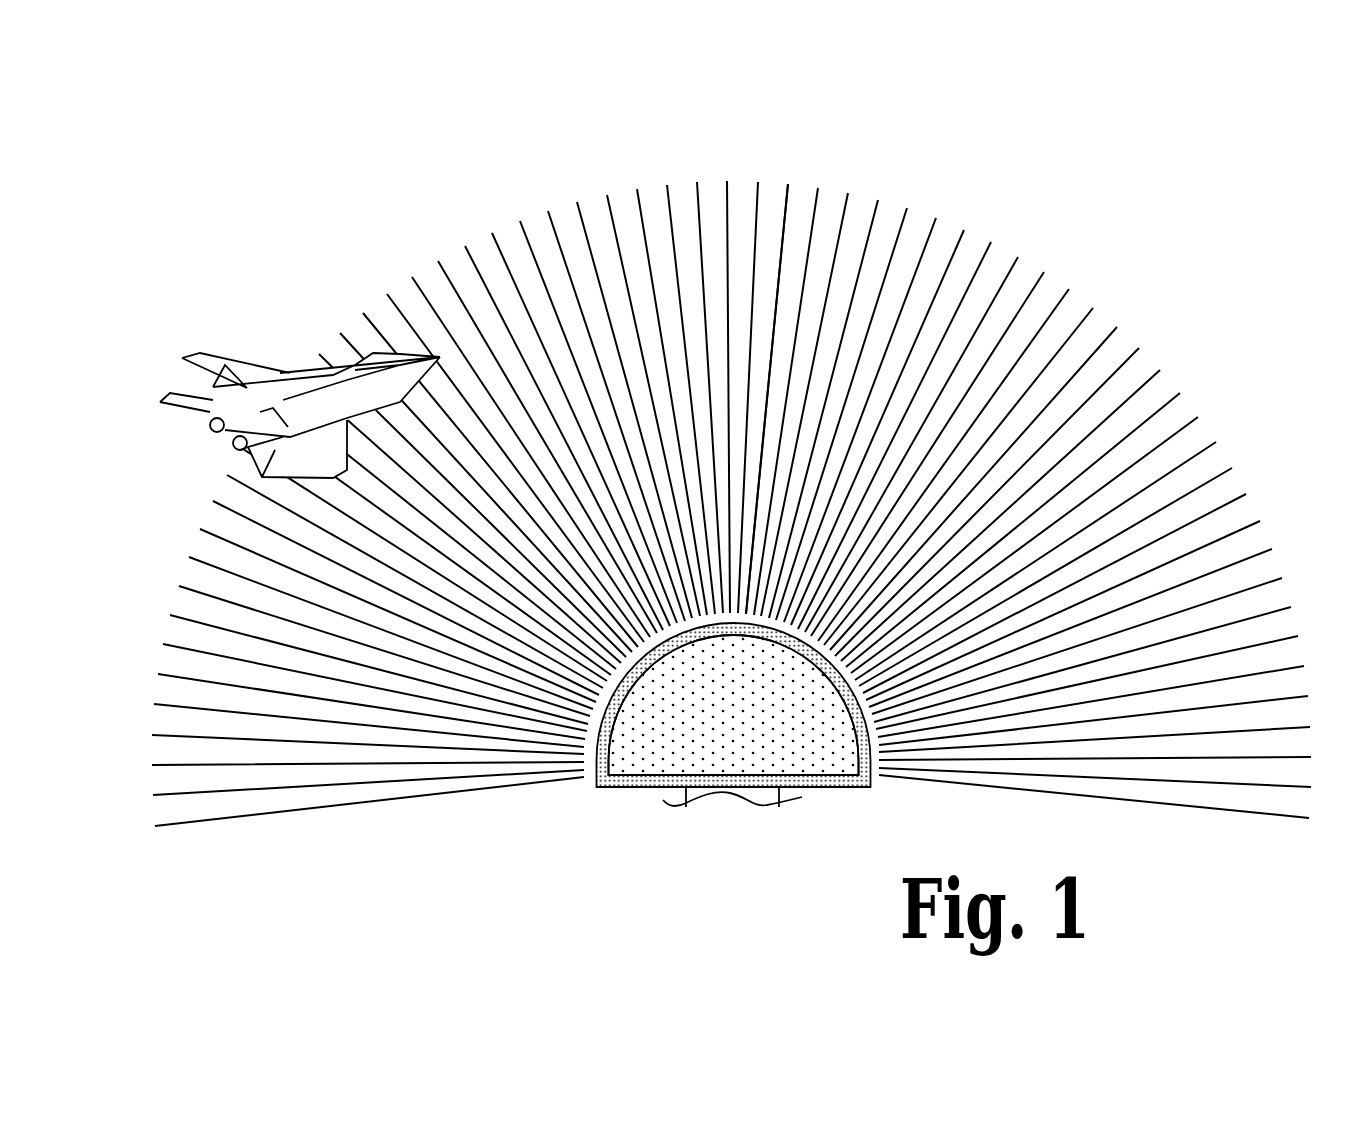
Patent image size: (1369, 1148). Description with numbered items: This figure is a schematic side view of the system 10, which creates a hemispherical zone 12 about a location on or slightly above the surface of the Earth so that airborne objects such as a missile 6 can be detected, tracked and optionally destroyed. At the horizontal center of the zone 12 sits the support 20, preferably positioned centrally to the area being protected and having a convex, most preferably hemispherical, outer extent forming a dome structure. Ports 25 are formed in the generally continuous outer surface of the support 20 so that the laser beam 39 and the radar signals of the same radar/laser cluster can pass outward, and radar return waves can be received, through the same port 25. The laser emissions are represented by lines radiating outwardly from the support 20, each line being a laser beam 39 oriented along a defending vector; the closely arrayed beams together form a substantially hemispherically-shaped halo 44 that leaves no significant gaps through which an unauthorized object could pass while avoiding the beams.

The system 10 is at (1150, 232).
The hemispherical zone 12 is at (975, 197).
The laser beam 39 is at (665, 180).
The halo 44 is at (772, 187).
The missile 6 is at (290, 385).
The support 20 is at (793, 780).
The port 25 is at (673, 748).